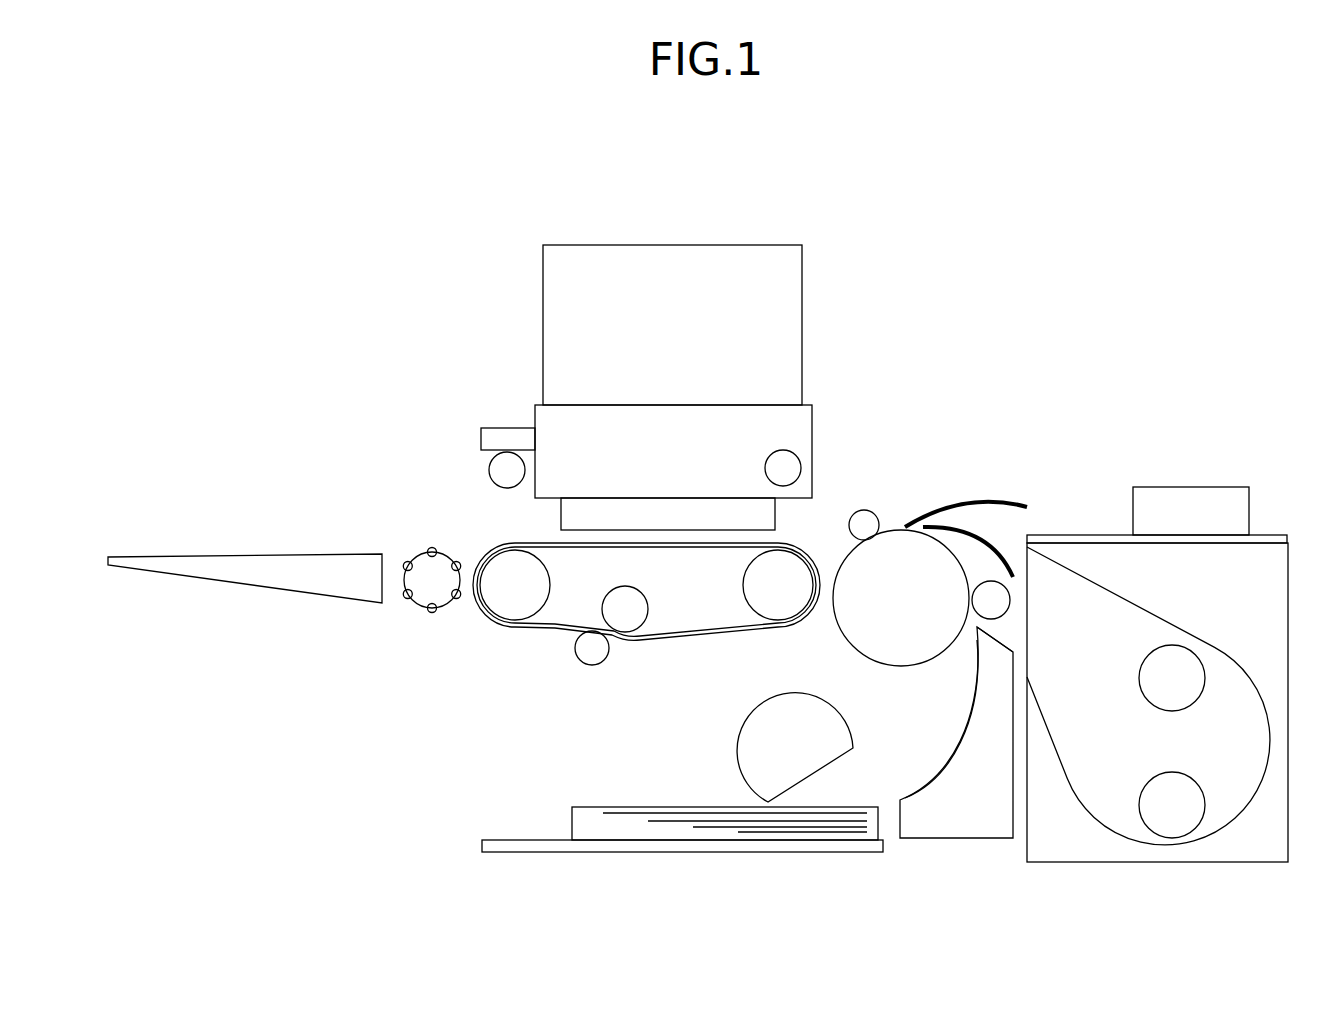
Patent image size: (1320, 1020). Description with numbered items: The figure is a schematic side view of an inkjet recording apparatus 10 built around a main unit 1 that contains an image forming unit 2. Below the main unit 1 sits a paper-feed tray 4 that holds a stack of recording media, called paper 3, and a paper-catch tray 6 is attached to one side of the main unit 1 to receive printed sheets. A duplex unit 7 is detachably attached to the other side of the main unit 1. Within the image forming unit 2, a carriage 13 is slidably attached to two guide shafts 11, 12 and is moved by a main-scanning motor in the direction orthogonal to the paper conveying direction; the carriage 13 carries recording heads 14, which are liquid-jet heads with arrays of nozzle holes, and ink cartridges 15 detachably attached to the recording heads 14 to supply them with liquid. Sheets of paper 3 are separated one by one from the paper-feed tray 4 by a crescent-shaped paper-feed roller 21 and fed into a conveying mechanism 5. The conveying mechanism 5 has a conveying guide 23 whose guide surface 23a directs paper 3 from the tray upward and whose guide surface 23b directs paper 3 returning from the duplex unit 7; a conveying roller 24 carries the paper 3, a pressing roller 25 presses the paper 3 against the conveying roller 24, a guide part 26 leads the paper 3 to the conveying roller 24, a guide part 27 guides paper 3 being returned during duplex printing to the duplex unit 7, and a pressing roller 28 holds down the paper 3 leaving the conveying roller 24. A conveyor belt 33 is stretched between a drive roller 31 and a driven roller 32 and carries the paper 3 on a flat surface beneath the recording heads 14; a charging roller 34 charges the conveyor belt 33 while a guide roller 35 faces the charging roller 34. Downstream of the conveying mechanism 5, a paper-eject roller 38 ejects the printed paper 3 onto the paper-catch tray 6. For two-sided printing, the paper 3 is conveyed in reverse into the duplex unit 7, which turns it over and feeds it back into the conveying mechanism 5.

The main unit 1 is at (492, 185).
The image forming unit 2 is at (509, 296).
The recording media (paper) 3 is at (652, 805).
The paper-feed tray 4 is at (687, 852).
The conveying mechanism 5 is at (658, 669).
The paper-catch tray 6 is at (318, 560).
The duplex unit 7 is at (1262, 482).
The inkjet recording apparatus 10 is at (1043, 220).
The guide shaft 11 is at (797, 468).
The guide shaft 12 is at (490, 470).
The carriage 13 is at (545, 430).
The recording heads 14 is at (563, 518).
The ink cartridges 15 is at (797, 308).
The paper-feed roller (crescent roller) 21 is at (747, 748).
The conveying guide 23 is at (963, 837).
The guide surface 23a is at (955, 742).
The guide surface 23b is at (998, 632).
The conveying roller 24 is at (901, 655).
The pressing roller 25 is at (990, 600).
The guide part 26 is at (985, 537).
The guide part 27 is at (957, 502).
The pressing roller 28 is at (864, 517).
The drive roller 31 is at (778, 610).
The driven roller 32 is at (505, 612).
The conveyor belt 33 is at (652, 559).
The charging roller 34 is at (590, 650).
The guide roller 35 is at (618, 610).
The paper-eject roller 38 is at (422, 597).